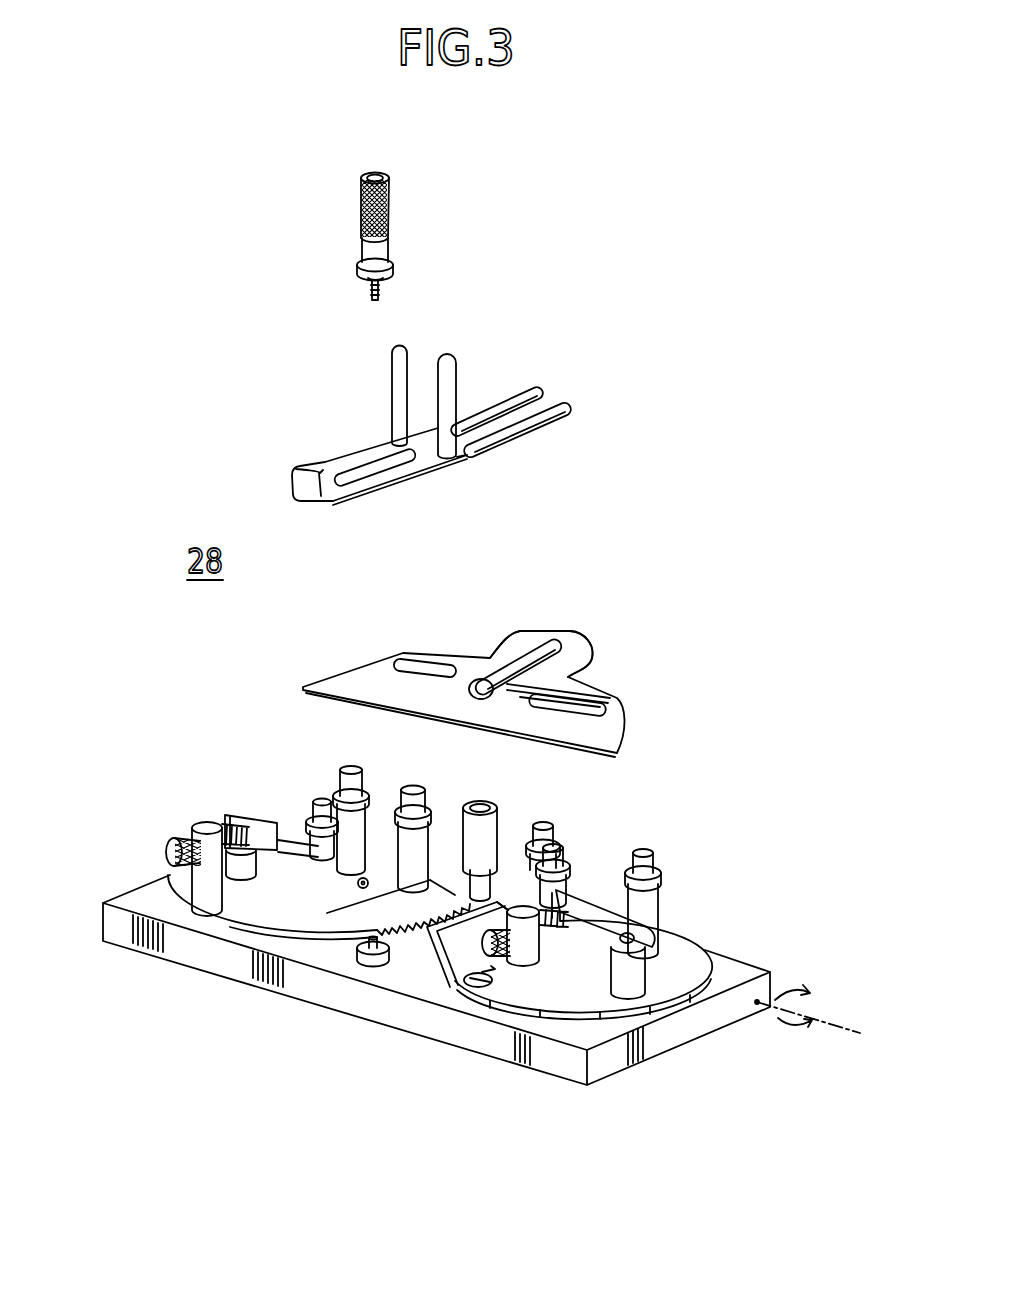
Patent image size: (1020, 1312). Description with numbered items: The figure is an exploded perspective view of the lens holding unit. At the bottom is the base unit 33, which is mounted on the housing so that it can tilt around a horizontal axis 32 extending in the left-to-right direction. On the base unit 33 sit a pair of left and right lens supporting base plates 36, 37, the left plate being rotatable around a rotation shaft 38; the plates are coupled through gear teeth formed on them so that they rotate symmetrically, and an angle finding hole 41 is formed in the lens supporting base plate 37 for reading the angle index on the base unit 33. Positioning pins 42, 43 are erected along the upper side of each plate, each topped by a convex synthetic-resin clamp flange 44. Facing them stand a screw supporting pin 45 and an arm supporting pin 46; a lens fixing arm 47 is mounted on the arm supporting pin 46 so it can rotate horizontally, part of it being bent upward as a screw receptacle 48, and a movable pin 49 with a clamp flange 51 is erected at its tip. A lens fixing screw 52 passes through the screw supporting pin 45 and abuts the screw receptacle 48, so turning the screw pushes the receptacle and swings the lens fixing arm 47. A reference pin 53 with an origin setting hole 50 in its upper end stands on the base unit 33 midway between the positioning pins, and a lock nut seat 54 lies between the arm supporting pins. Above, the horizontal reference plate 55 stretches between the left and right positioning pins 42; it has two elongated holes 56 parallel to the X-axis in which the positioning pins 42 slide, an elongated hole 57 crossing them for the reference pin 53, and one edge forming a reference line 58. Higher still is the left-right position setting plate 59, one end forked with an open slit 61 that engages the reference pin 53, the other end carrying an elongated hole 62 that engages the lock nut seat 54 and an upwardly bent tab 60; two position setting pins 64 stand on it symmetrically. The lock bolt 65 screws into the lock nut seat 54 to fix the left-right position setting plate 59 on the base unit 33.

The horizontal axis 32 is at (828, 1005).
The base unit 33 is at (340, 1000).
The lens supporting base plate 36 is at (247, 930).
The lens supporting base plate 37 is at (690, 957).
The rotation shaft 38 is at (358, 883).
The angle finding hole 41 is at (470, 993).
The positioning pin 42 is at (390, 795).
The positioning pin 43 is at (662, 898).
The clamp flange 44 is at (563, 838).
The screw supporting pin 45 is at (192, 888).
The arm supporting pin 46 is at (652, 985).
The lens fixing arm 47 is at (593, 957).
The screw receptacle 48 is at (580, 930).
The movable pin 49 is at (600, 885).
The origin setting hole 50 is at (478, 800).
The clamp flange 51 is at (573, 855).
The lens fixing screw 52 is at (447, 983).
The reference pin 53 is at (497, 830).
The lock nut seat 54 is at (387, 970).
The horizontal reference plate 55 is at (572, 647).
The elongated hole 56 is at (593, 710).
The elongated hole 57 is at (543, 653).
The reference line 58 is at (303, 690).
The left-right position setting plate 59 is at (403, 490).
The tab 60 is at (295, 485).
The slit 61 is at (510, 415).
The elongated hole 62 is at (363, 473).
The position setting pin 64 is at (458, 368).
The lock bolt 65 is at (392, 210).